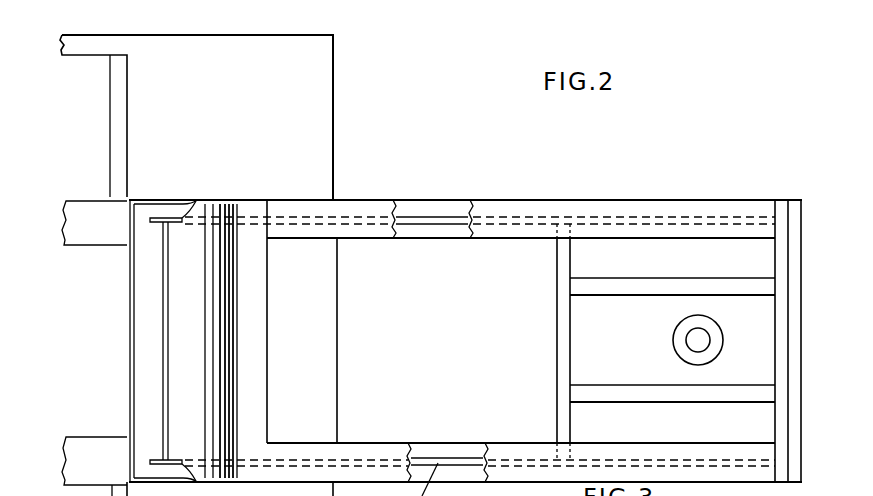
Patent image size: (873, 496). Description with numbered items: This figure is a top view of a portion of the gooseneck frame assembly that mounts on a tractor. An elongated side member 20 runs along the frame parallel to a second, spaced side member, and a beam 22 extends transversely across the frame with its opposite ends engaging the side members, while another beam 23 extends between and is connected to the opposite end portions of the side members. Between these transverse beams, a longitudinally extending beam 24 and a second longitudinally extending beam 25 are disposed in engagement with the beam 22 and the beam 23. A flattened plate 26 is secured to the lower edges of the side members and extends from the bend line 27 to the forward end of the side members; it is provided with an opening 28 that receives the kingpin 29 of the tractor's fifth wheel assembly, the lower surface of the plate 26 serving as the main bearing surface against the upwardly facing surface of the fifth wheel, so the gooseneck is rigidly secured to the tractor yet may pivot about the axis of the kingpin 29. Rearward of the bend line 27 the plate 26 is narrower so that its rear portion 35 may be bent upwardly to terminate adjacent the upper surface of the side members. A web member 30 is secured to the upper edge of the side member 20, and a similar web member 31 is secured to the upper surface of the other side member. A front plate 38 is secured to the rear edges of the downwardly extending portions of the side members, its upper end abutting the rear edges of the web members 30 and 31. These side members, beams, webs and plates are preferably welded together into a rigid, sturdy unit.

The side member 20 is at (428, 217).
The beam 22 is at (562, 352).
The beam 23 is at (783, 413).
The longitudinally extending beam 24 is at (607, 392).
The longitudinally extending beam 25 is at (655, 287).
The flattened plate 26 is at (447, 340).
The bend line 27 is at (338, 323).
The opening 28 is at (720, 332).
The kingpin 29 is at (703, 342).
The web member 30 is at (685, 203).
The web member 31 is at (698, 472).
The rear portion 35 is at (325, 383).
The front plate 38 is at (255, 325).